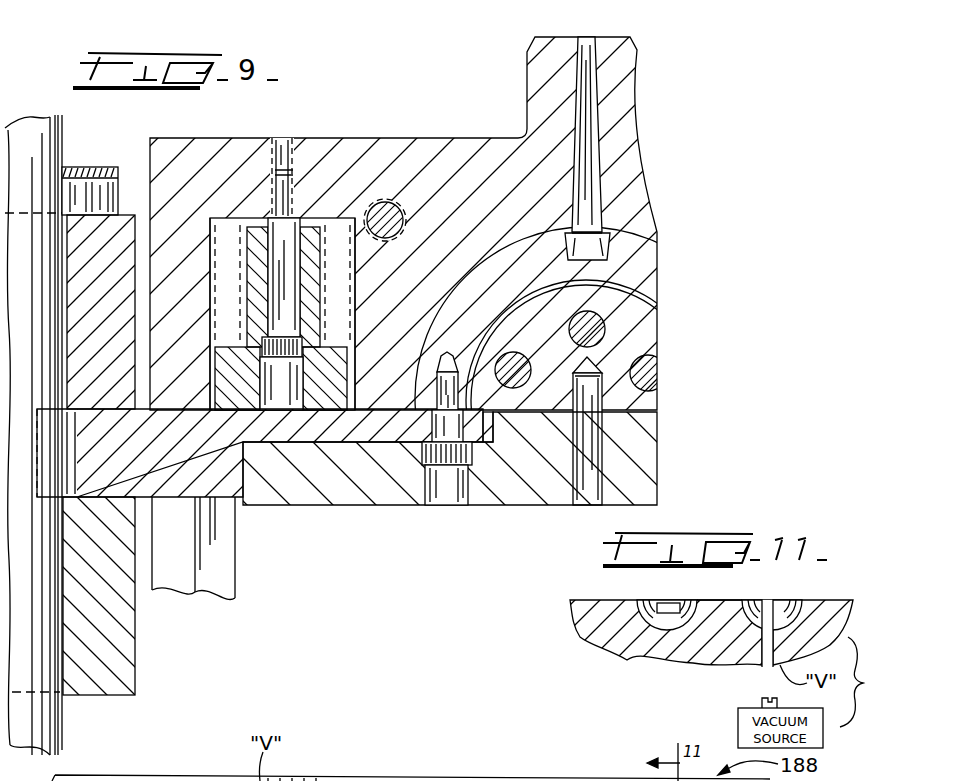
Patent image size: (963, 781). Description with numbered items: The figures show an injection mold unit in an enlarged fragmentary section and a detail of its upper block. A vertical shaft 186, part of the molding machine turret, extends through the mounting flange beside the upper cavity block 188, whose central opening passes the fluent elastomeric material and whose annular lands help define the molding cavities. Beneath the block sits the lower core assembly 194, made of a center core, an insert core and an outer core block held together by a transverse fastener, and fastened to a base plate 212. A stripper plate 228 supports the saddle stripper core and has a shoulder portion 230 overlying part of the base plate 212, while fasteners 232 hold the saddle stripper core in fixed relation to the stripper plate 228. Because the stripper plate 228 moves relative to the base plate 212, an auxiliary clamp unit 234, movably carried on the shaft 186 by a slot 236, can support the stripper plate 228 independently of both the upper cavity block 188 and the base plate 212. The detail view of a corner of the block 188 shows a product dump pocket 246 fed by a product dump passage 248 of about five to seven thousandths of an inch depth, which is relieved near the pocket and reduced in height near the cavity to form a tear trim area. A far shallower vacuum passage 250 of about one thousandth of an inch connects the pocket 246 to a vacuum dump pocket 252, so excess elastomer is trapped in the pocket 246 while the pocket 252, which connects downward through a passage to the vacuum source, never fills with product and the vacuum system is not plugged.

In FIG. 9, the vertical shaft 186 is at (82, 183).
In FIG. 9, the upper cavity block 188 is at (475, 160).
In FIG. 9, the lower core assembly 194 is at (667, 341).
In FIG. 9, the base plate 212 is at (380, 480).
In FIG. 9, the stripper plate 228 is at (180, 464).
In FIG. 9, the shoulder portion 230 is at (353, 423).
In FIG. 9, the fasteners 232 is at (453, 440).
In FIG. 9, the auxiliary clamp unit 234 is at (125, 636).
In FIG. 9, the slot 236 is at (83, 405).
In FIG. 11, the product dump pocket 246 is at (648, 607).
In FIG. 11, the product dump passage 248 is at (667, 610).
In FIG. 11, the vacuum passage 250 is at (728, 612).
In FIG. 9, the vacuum dump pocket 252 is at (217, 780).
In FIG. 11, the vacuum dump pocket 252 is at (787, 617).